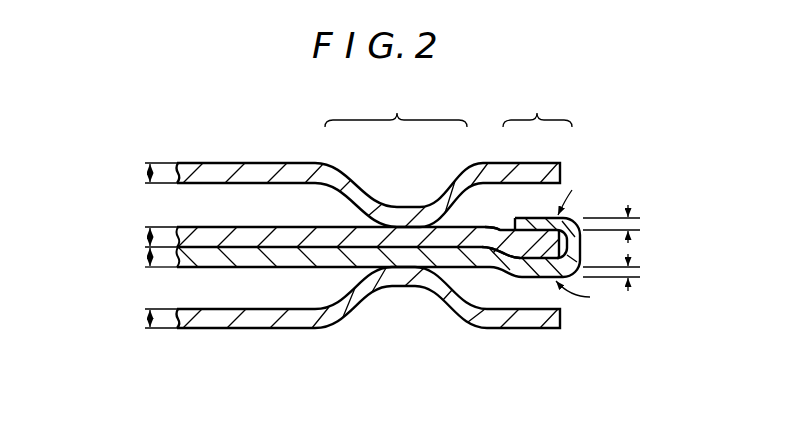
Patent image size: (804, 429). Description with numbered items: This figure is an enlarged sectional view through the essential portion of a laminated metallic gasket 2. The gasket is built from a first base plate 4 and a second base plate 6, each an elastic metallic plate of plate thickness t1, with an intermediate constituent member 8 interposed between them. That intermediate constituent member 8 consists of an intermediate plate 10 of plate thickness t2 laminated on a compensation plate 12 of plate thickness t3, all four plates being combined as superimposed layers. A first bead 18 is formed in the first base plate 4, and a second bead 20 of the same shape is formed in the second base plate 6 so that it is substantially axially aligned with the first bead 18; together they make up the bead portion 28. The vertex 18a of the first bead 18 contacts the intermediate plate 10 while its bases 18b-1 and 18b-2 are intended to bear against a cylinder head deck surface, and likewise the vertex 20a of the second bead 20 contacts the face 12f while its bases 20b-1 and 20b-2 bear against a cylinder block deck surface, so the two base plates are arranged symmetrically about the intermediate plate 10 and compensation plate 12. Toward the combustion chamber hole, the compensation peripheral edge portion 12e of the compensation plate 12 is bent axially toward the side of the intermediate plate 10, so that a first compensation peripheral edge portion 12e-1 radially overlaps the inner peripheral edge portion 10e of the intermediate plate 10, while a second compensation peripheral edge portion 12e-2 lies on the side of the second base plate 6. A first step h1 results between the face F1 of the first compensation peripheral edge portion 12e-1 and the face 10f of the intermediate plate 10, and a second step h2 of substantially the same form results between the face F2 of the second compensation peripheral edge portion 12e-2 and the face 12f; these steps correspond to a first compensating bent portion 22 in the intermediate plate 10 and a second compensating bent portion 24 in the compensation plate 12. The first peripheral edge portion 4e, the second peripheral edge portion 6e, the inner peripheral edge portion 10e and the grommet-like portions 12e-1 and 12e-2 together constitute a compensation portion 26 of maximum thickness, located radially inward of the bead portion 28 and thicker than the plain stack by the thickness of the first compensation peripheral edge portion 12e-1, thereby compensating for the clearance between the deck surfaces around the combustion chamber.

The laminated metallic gasket 2 is at (255, 100).
The first base plate 4 is at (234, 160).
The first peripheral edge portion 4e is at (541, 166).
The second base plate 6 is at (219, 332).
The second peripheral edge portion 6e is at (545, 331).
The intermediate constituent member 8 is at (159, 216).
The intermediate plate 10 is at (252, 225).
The face of the intermediate plate 10f is at (209, 225).
The inner peripheral edge portion of the intermediate plate 10e is at (552, 238).
The compensation plate 12 is at (255, 271).
The face of the compensation plate 12f is at (191, 271).
The compensation peripheral edge portion 12e is at (574, 249).
The first compensation peripheral edge portion 12e-1 is at (541, 217).
The second compensation peripheral edge portion 12e-2 is at (533, 281).
The first bead 18 is at (420, 210).
The vertex of the first bead 18a is at (394, 228).
The base of the first bead 18b-1 is at (463, 167).
The base of the first bead 18b-2 is at (332, 162).
The second bead 20 is at (408, 288).
The vertex of the second bead 20a is at (396, 265).
The base of the second bead 20b-1 is at (462, 332).
The base of the second bead 20b-2 is at (330, 331).
The first compensating bent portion 22 is at (512, 229).
The second compensating bent portion 24 is at (505, 265).
The compensation portion 26 is at (537, 110).
The bead portion 28 is at (396, 109).
The plate thickness t1 is at (146, 173).
The plate thickness t2 is at (146, 237).
The plate thickness t3 is at (146, 257).
The first step h1 is at (618, 221).
The second step h2 is at (618, 280).
The face of the first compensation portion F1 is at (575, 191).
The face of the second compensation peripheral edge portion F2 is at (583, 294).